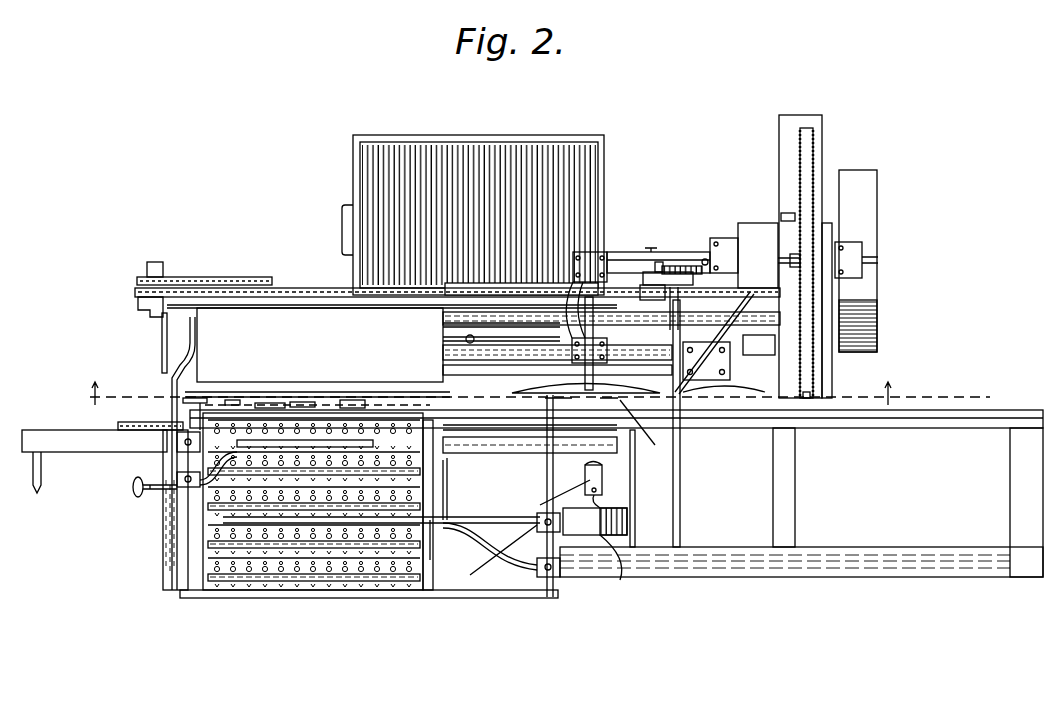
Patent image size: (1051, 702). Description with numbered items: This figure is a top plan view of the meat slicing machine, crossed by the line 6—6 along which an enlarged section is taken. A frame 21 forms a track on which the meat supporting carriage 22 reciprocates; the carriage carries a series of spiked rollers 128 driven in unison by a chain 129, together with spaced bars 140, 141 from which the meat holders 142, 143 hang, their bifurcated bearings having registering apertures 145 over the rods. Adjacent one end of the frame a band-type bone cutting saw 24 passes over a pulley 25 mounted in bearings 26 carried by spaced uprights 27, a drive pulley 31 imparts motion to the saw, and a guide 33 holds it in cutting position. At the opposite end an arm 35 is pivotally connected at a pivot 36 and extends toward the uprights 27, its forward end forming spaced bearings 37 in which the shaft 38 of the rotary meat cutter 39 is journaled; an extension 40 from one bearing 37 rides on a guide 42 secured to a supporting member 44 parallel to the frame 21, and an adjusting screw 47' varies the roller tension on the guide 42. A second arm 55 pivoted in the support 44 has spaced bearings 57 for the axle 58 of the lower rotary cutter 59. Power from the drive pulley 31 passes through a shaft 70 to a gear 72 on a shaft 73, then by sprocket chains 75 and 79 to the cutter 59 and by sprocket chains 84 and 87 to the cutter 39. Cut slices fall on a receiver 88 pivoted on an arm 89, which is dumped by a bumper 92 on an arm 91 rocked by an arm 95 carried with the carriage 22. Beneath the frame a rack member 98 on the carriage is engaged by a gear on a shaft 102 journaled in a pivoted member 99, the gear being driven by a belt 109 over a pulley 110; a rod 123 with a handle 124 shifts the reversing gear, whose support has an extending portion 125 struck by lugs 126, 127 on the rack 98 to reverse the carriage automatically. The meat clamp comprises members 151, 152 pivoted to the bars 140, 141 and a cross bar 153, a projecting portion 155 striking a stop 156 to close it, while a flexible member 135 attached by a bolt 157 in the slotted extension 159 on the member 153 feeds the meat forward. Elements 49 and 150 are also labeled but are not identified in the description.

The line 6— 6 is at (526, 395).
The frame 21 is at (1000, 420).
The meat supporting carriage 22 is at (205, 598).
The bone cutting saw 24 is at (812, 150).
The pulley 25 is at (823, 160).
The bearings 26 is at (886, 244).
The spaced uprights 27 is at (756, 232).
The drive pulley 31 is at (878, 340).
The guide 33 is at (832, 396).
The arm 35 is at (294, 310).
The pivot 36 is at (168, 254).
The spaced bearings 37 is at (600, 262).
The shaft 38 is at (611, 310).
The rotary meat cutter 39 is at (642, 432).
The extension 40 is at (640, 255).
The guide 42 is at (664, 275).
The supporting member 44 is at (445, 325).
The adjusting screw 47' is at (680, 225).
The guide bracket 49 is at (138, 301).
The arm 55 is at (563, 385).
The spaced bearings 57 is at (660, 343).
The axle 58 is at (729, 359).
The rotary cutter 59 is at (726, 343).
The shaft 70 is at (708, 258).
The gear 72 is at (690, 290).
The shaft 73 is at (690, 490).
The sprocket chain 75 is at (466, 487).
The sprocket chain 79 is at (529, 448).
The sprocket chain 84 is at (248, 278).
The sprocket chain 87 is at (314, 276).
The receiver 88 is at (236, 365).
The arm or pivot 89 is at (162, 320).
The arm 91 is at (450, 343).
The bumper 92 is at (478, 339).
The arm 95 is at (190, 371).
The rack member 98 is at (459, 489).
The member 99 is at (520, 162).
The shaft 102 is at (549, 497).
The belt 109 is at (618, 578).
The pulley 110 is at (620, 503).
The bar or rod 123 is at (146, 491).
The handle 124 is at (133, 488).
The extending portion 125 is at (627, 520).
The lug or extension 126 is at (612, 480).
The lug or extension 127 is at (37, 495).
The spiked rollers 128 is at (320, 545).
The chain or belt 129 is at (433, 560).
The flexible member 135 is at (265, 403).
The bar or rod 140 is at (165, 526).
The bar or rod 141 is at (556, 484).
The meat holder 142 is at (305, 400).
The meat holder 143 is at (470, 522).
The aperture 145 is at (178, 476).
The rod 150 is at (670, 311).
The clamp member 151 is at (183, 401).
The clamp member 152 is at (530, 445).
The cross bar 153 is at (228, 400).
The projecting portion 155 is at (530, 443).
The stop 156 is at (120, 425).
The bolt 157 is at (126, 443).
The extension 159 is at (360, 400).